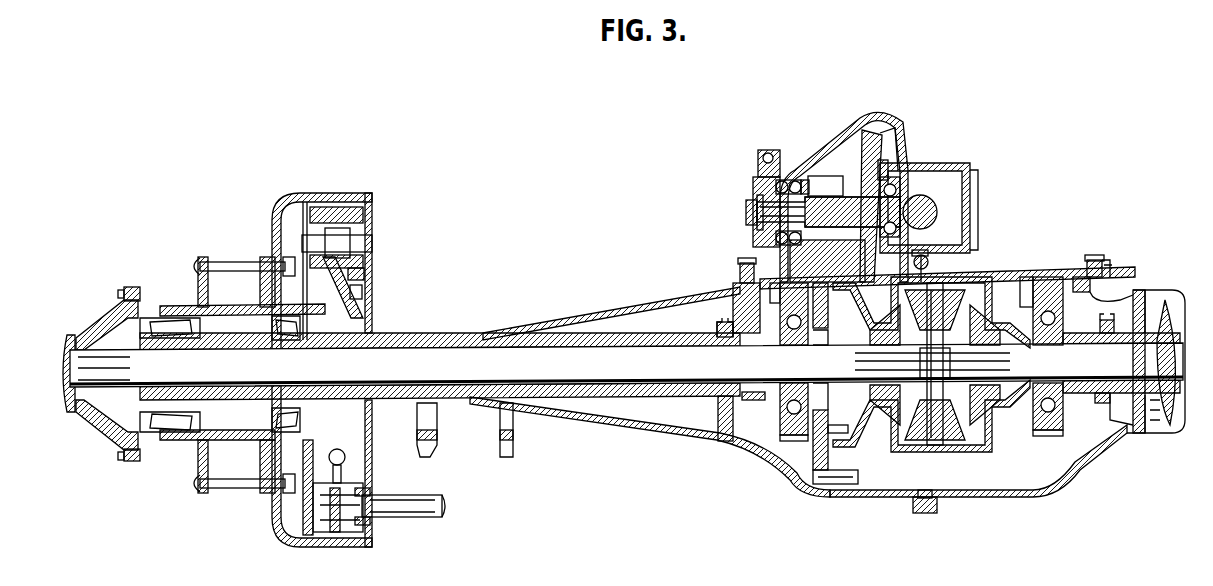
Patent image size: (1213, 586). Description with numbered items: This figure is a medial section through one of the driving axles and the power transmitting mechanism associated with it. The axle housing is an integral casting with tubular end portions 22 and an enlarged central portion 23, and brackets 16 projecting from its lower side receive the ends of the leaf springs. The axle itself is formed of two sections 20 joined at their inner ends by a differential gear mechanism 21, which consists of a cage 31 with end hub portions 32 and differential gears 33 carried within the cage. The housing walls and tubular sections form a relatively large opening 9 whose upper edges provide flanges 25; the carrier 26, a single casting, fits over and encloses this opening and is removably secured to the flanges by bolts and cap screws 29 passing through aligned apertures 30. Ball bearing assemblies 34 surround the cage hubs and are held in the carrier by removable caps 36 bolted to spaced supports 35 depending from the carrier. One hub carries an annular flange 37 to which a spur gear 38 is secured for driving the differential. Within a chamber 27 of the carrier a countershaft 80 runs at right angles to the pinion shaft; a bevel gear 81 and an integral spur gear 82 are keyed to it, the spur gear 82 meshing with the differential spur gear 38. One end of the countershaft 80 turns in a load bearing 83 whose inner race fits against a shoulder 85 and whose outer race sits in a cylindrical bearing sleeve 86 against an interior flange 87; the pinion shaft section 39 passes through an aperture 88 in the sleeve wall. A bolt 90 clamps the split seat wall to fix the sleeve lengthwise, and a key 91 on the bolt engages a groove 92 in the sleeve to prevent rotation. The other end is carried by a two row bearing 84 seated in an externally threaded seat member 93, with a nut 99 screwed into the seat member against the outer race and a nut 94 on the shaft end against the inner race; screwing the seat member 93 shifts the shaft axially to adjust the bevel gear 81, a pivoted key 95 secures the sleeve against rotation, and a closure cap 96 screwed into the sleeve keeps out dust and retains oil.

The opening 9 is at (1115, 300).
The brackets 16 is at (503, 458).
The axle sections 20 is at (626, 365).
The differential gear mechanism 21 is at (978, 425).
The tubular end portions 22 is at (657, 302).
The central portion 23 is at (982, 497).
The flanges 25 is at (735, 285).
The carrier 26 is at (1002, 267).
The chamber 27 is at (844, 197).
The bolts and cap screws 29 is at (745, 262).
The apertures 30 is at (1110, 262).
The cage 31 is at (925, 435).
The end hub portions 32 is at (850, 430).
The differential gears 33 is at (945, 420).
The ball bearing assemblies 34 is at (785, 407).
The spaced supports 35 is at (780, 305).
The removable caps 36 is at (800, 440).
The annular flange 37 is at (835, 450).
The spur gear 38 is at (858, 478).
The pinion shaft section 39 is at (932, 222).
The countershaft 80 is at (828, 212).
The bevel gear 81 is at (870, 130).
The spur gear 82 is at (838, 180).
The load bearing 83 is at (885, 163).
The two row bearing 84 is at (797, 178).
The shoulder 85 is at (890, 135).
The cylindrical bearing sleeve 86 is at (925, 208).
The flange 87 is at (900, 190).
The aperture 88 is at (975, 200).
The bolt 90 is at (916, 266).
The key 91 is at (928, 264).
The groove 92 is at (915, 250).
The seat member 93 is at (755, 185).
The nut 94 is at (758, 200).
The pivoted key 95 is at (770, 152).
The closure cap 96 is at (746, 210).
The nut 99 is at (806, 178).